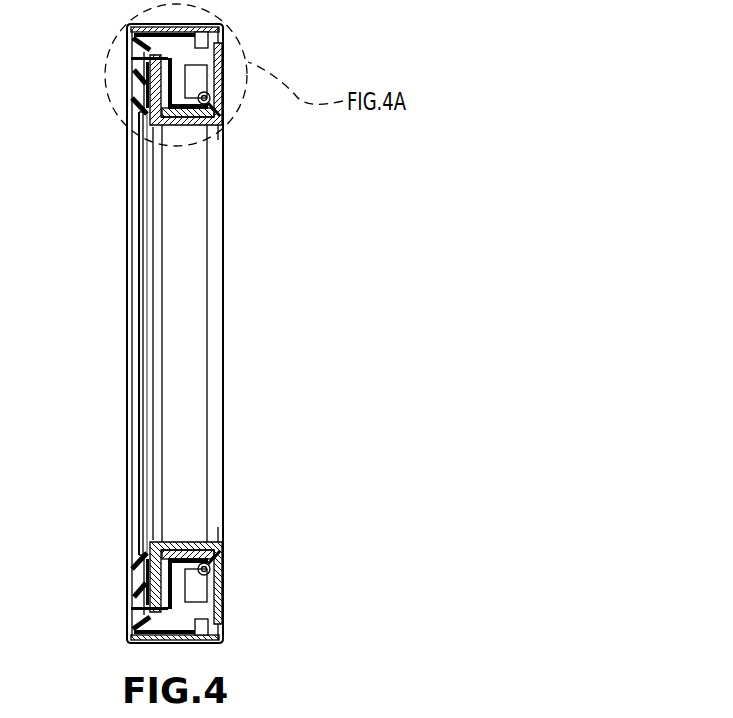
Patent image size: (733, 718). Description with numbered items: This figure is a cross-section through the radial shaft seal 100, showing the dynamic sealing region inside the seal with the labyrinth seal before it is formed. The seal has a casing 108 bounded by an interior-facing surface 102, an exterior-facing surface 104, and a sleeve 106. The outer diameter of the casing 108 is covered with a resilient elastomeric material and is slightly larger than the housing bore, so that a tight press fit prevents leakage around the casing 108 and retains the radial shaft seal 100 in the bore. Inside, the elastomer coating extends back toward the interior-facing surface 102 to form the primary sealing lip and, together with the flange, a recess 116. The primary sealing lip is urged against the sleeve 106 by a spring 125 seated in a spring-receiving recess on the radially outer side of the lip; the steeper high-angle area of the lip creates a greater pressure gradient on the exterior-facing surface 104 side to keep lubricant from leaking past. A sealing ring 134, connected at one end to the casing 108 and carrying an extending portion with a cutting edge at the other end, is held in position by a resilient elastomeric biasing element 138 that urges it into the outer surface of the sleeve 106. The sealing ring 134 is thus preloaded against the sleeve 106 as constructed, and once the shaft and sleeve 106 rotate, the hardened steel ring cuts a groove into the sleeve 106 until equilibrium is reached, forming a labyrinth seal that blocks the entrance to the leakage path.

The radial shaft seal 100 is at (278, 335).
The interior-facing surface 102 is at (223, 35).
The exterior-facing surface 104 is at (127, 450).
The sleeve 106 is at (224, 130).
The casing 108 is at (138, 27).
The recess 116 is at (208, 80).
The spring 125 is at (218, 113).
The sealing ring 134 is at (131, 111).
The resilient elastomeric biasing element 138 is at (131, 75).